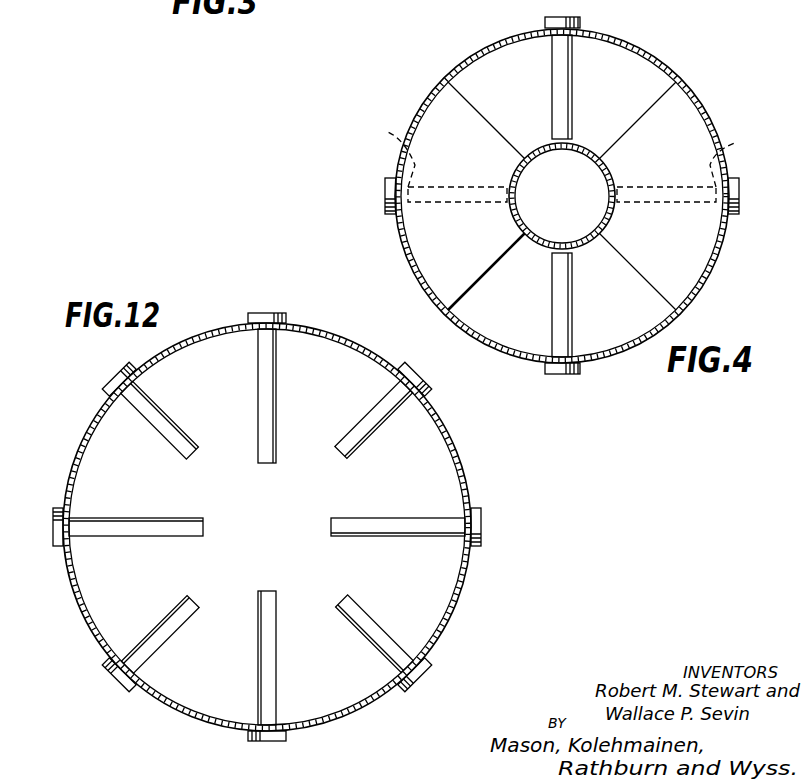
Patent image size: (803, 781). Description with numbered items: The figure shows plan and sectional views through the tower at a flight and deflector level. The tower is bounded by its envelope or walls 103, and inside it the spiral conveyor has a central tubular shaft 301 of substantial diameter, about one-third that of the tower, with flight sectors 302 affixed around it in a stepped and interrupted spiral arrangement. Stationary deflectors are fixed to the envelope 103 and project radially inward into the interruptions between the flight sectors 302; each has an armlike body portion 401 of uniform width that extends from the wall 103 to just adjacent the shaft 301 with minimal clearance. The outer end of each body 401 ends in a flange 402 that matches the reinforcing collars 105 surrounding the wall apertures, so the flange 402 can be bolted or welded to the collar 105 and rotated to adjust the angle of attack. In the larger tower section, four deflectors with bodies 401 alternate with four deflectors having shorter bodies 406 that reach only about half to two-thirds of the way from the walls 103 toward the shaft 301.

In FIG. 4, the envelope 103 is at (668, 70).
In FIG. 12, the envelope 103 is at (462, 477).
In FIG. 4, the reinforcing collar 105 is at (545, 21).
In FIG. 12, the reinforcing collar 105 is at (290, 318).
In FIG. 4, the central tubular shaft 301 is at (580, 152).
In FIG. 4, the flight sector 302 is at (491, 250).
In FIG. 4, the body portion 401 is at (572, 108).
In FIG. 12, the body portion 401 is at (277, 414).
In FIG. 4, the flange 402 is at (580, 22).
In FIG. 12, the flange 402 is at (285, 302).
In FIG. 12, the shorter bodies 406 is at (185, 437).